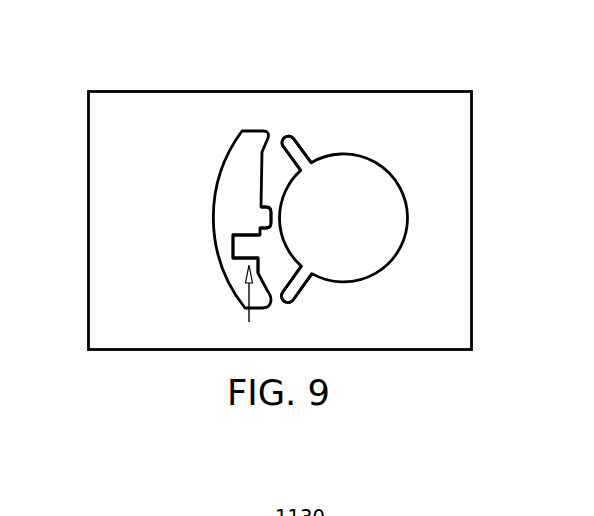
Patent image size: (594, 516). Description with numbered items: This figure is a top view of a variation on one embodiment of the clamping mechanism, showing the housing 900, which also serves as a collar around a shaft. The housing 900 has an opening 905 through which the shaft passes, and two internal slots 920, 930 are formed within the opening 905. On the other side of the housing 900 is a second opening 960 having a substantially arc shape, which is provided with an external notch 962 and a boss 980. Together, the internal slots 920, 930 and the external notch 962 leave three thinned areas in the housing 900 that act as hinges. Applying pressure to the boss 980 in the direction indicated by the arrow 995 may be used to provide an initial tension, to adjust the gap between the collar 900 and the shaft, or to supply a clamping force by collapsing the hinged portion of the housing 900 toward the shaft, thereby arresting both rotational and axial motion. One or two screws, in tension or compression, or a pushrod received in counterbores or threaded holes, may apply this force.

The housing 900 is at (472, 124).
The opening 905 is at (373, 208).
The internal slot 920 is at (292, 302).
The internal slot 930 is at (288, 130).
The opening 960 is at (242, 130).
The notch 962 is at (260, 219).
The boss 980 is at (238, 267).
The arrow 995 is at (249, 318).